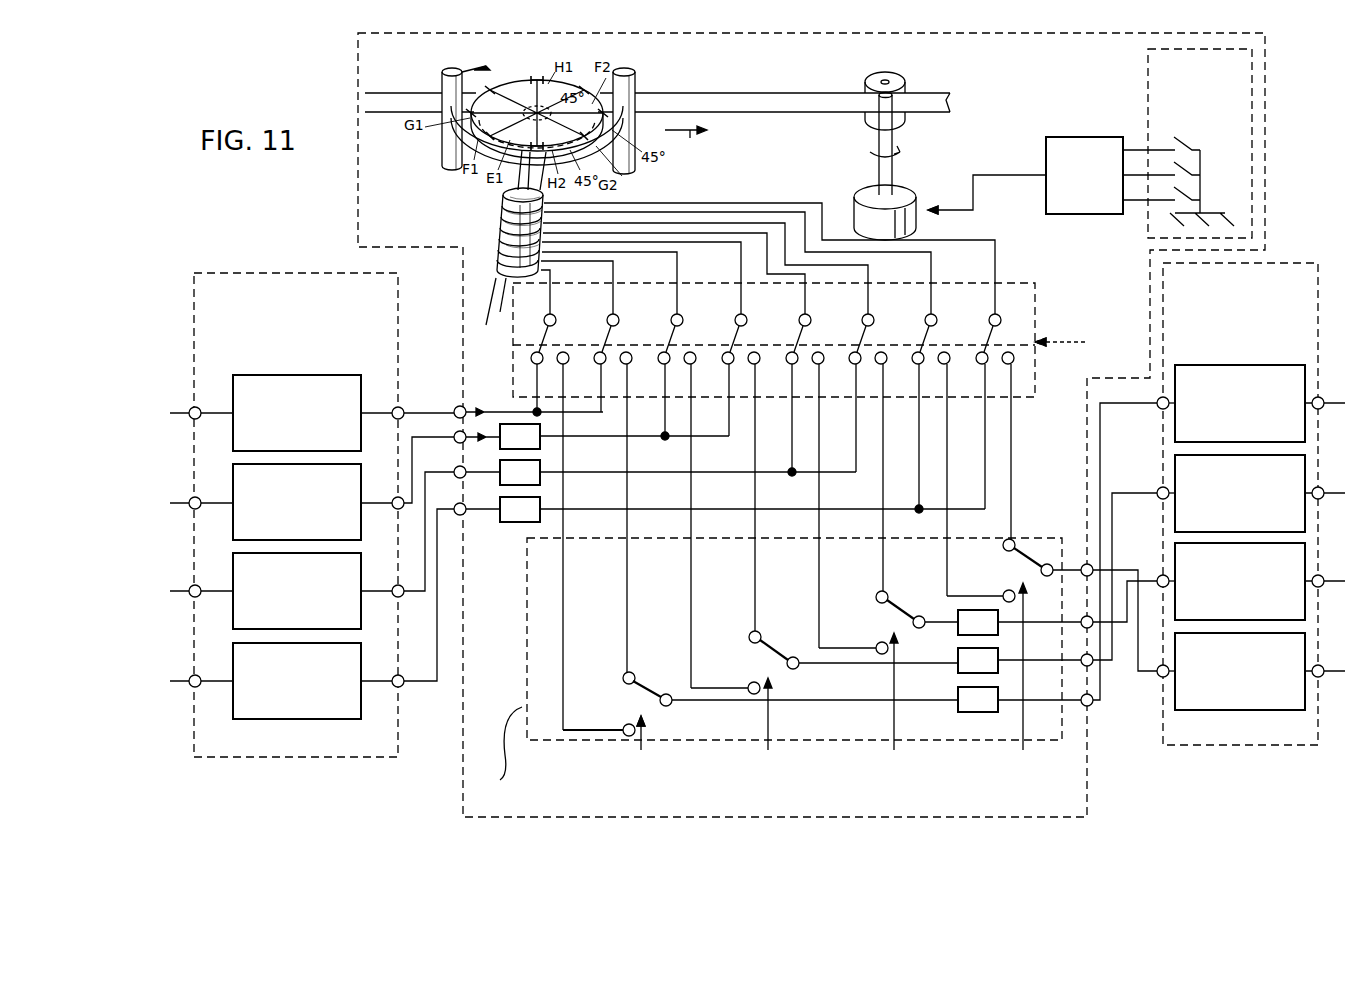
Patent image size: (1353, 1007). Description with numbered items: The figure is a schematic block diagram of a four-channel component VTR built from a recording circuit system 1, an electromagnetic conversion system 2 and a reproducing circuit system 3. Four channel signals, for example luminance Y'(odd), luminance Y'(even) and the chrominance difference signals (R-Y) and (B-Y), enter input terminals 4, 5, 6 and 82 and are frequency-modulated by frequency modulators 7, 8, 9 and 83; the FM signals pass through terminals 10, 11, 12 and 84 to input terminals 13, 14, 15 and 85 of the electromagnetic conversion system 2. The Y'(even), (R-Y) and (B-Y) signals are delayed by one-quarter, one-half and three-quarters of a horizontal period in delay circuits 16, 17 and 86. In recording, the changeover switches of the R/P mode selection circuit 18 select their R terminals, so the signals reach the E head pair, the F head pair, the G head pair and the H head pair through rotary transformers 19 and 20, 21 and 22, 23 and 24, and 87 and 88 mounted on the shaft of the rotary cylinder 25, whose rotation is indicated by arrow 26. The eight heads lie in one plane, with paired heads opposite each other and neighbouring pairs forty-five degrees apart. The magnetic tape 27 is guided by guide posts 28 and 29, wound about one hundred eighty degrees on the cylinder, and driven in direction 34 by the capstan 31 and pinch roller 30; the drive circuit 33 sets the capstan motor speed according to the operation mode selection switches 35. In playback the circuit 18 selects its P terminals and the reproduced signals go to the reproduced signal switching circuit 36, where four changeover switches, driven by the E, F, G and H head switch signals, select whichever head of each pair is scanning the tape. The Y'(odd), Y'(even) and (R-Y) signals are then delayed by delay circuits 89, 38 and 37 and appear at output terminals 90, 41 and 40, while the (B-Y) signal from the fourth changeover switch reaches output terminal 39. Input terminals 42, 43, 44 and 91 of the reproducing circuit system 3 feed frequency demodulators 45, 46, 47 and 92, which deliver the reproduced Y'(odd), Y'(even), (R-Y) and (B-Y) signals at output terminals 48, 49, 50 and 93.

The recording circuit system 1 is at (268, 273).
The electromagnetic conversion system 2 is at (358, 62).
The reproducing circuit system 3 is at (1290, 263).
The input terminal 4 is at (191, 408).
The input terminal 5 is at (192, 498).
The input terminal 6 is at (191, 587).
The frequency modulator 7 is at (236, 440).
The frequency modulator 8 is at (236, 530).
The frequency modulator 9 is at (236, 612).
The terminal 10 is at (403, 408).
The terminal 11 is at (394, 497).
The terminal 12 is at (403, 597).
The input terminal 13 is at (466, 418).
The input terminal 14 is at (457, 443).
The input terminal 15 is at (457, 478).
The delay circuit (D1) 16 is at (506, 449).
The delay circuit (D2) 17 is at (506, 486).
The R/P mode selection circuit 18 is at (1024, 400).
The rotary transformer 19 is at (501, 302).
The rotary transformer 20 is at (483, 310).
The rotary transformer 21 is at (497, 251).
The rotary transformer 22 is at (505, 244).
The rotary transformer 23 is at (504, 232).
The rotary transformer 24 is at (505, 220).
The rotary cylinder 25 is at (533, 84).
The drum rotation direction 26 is at (468, 67).
The magnetic tape 27 is at (725, 93).
The guide post 28 is at (442, 74).
The guide post 29 is at (635, 72).
The pinch roller 30 is at (902, 74).
The capstan 31 is at (878, 170).
The drive circuit 33 is at (1096, 137).
The direction 34 is at (686, 144).
The operation mode selection switches 35 is at (1148, 70).
The reproduced signal switching circuit 36 is at (527, 657).
The delay circuit 37 is at (958, 612).
The delay circuit 38 is at (958, 670).
The output terminal 39 is at (1083, 564).
The output terminal 40 is at (1084, 616).
The output terminal 41 is at (1092, 665).
The input terminal 42 is at (1158, 408).
The input terminal 43 is at (1158, 487).
The input terminal 44 is at (1158, 575).
The frequency demodulator 45 is at (1175, 380).
The frequency demodulator 46 is at (1180, 512).
The frequency demodulator 47 is at (1180, 610).
The output terminal 48 is at (1322, 398).
The output terminal 49 is at (1322, 488).
The output terminal 50 is at (1322, 577).
The input terminal 82 is at (191, 677).
The frequency modulator 83 is at (305, 719).
The terminal 84 is at (403, 687).
The input terminal 85 is at (465, 516).
The delay circuit (D3) 86 is at (520, 524).
The rotary transformer 87 is at (505, 208).
The rotary transformer 88 is at (506, 193).
The delay circuit 89 is at (958, 708).
The output terminal 90 is at (1090, 705).
The input terminal 91 is at (1158, 677).
The frequency demodulator 92 is at (1258, 710).
The output terminal 93 is at (1322, 666).